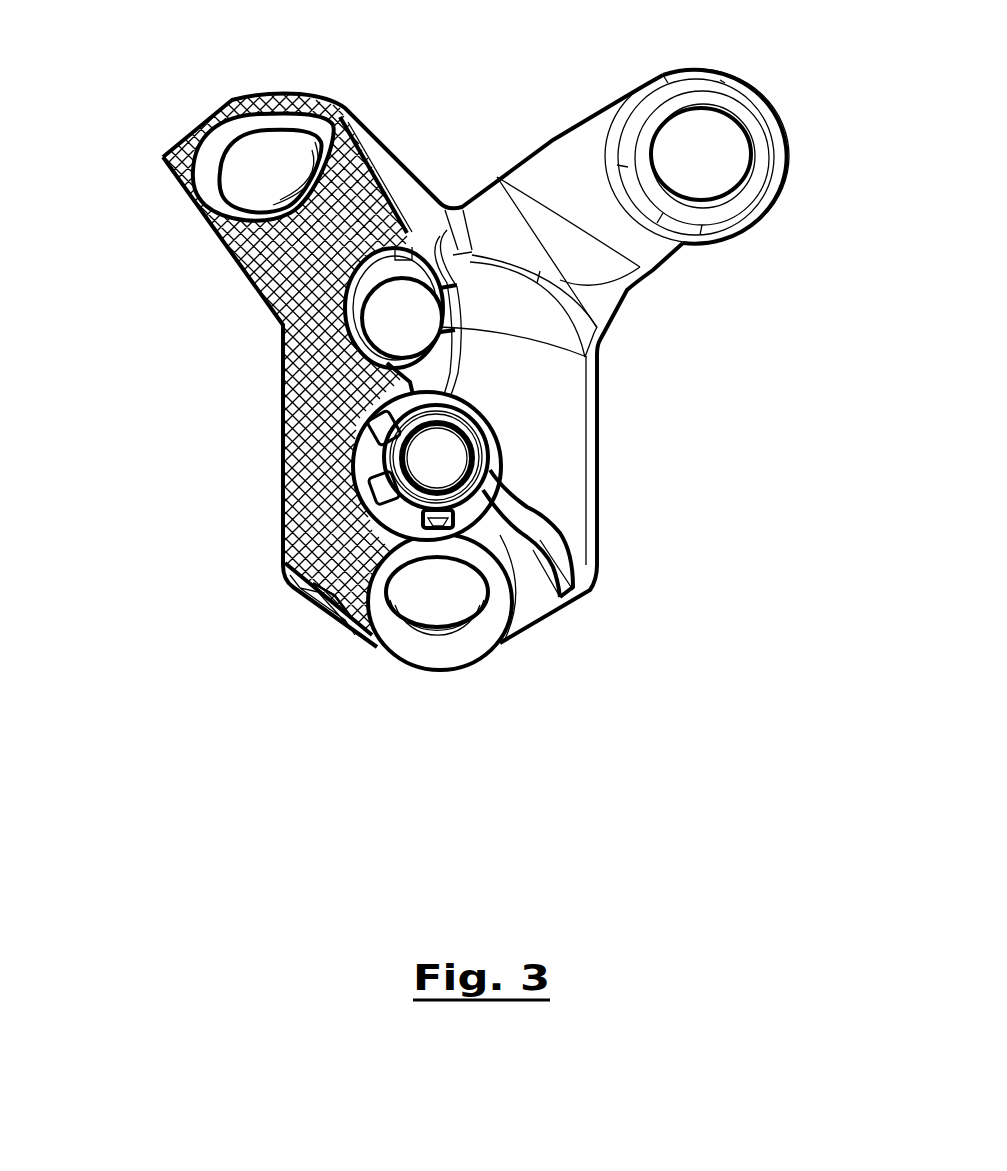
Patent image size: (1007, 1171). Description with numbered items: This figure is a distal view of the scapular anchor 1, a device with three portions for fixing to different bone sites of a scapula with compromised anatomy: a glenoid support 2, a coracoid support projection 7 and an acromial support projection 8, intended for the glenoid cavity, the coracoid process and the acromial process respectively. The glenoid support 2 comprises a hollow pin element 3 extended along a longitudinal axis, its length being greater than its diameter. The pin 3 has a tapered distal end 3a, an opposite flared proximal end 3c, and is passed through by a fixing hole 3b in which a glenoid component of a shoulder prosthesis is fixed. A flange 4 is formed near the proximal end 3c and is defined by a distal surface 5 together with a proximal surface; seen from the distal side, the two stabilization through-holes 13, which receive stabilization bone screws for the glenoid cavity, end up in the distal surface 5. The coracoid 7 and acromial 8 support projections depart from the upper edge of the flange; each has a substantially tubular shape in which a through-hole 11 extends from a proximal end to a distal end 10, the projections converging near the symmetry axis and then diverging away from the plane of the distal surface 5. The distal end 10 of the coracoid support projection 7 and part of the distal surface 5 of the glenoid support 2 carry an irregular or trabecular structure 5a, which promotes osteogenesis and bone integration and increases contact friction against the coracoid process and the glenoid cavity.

The anchor 1 is at (300, 795).
The glenoid support 2 is at (233, 606).
The pin element 3 is at (368, 450).
The tapered distal end 3a is at (282, 495).
The fixing hole 3b is at (453, 455).
The flared proximal end 3c is at (388, 402).
The flange 4 is at (606, 445).
The distal surface 5 is at (562, 402).
The trabecular structure 5a is at (313, 270).
The coracoid support projection 7 is at (365, 112).
The acromial support projection 8 is at (578, 108).
The distal end 10 is at (197, 225).
The through-hole 11 is at (243, 163).
The stabilization through-holes 13 is at (395, 317).